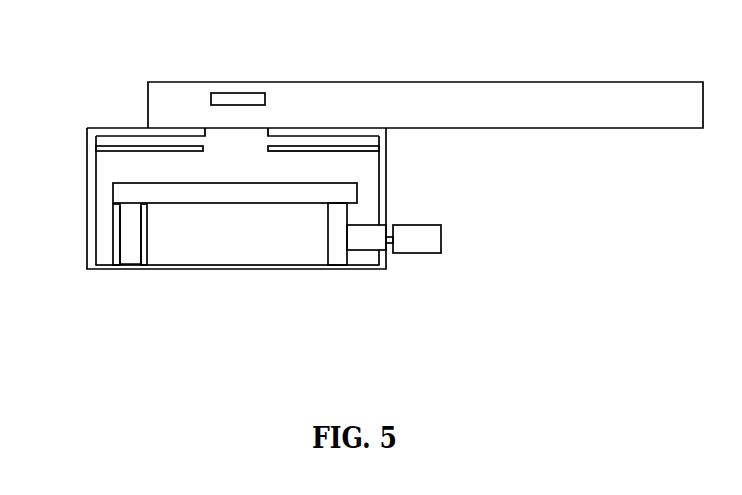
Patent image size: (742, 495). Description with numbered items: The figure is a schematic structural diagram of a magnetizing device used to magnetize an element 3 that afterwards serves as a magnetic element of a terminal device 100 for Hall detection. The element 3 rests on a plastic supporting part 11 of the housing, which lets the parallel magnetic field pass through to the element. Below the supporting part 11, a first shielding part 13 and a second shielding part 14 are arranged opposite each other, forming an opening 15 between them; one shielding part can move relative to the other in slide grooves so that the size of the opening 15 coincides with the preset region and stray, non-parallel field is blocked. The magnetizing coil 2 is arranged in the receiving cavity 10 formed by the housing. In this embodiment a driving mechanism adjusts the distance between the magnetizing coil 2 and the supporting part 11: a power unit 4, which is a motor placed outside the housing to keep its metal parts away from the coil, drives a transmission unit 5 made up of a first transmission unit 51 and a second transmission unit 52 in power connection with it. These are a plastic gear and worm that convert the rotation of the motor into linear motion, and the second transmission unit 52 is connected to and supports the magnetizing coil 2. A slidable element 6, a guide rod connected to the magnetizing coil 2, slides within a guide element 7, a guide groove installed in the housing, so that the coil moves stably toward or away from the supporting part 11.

The terminal device 100 is at (313, 99).
The element to be magnetized 3 is at (232, 98).
The supporting part 11 is at (111, 130).
The opening 15 is at (222, 155).
The first shielding part 13 is at (103, 148).
The second shielding part 14 is at (363, 150).
The receiving cavity 10 is at (103, 193).
The magnetizing coil 2 is at (357, 188).
The guide element 7 is at (118, 228).
The slidable element 6 is at (125, 258).
The second transmission unit 52 is at (335, 252).
The first transmission unit 51 is at (363, 243).
The power unit 4 is at (420, 240).
The transmission unit 5 is at (402, 325).